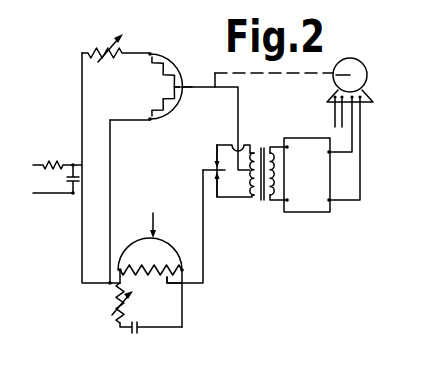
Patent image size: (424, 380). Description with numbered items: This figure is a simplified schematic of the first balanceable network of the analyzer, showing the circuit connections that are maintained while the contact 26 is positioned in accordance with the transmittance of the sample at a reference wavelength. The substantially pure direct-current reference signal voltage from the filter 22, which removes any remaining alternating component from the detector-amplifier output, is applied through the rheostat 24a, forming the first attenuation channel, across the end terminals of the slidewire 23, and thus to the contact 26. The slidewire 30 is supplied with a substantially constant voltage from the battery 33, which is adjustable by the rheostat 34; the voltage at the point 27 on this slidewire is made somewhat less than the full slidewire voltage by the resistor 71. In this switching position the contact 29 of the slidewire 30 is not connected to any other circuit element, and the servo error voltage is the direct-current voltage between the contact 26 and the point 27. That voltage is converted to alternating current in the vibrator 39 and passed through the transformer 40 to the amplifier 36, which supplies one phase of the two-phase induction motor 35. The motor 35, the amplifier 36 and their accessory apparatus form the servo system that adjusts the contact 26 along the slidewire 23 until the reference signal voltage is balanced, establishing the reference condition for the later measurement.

The filter 22 is at (55, 152).
The slidewire 23 is at (185, 77).
The rheostat 24a is at (104, 44).
The contact 26 is at (187, 89).
The point 27 is at (168, 272).
The contact 29 is at (157, 246).
The slidewire 30 is at (151, 260).
The battery 33 is at (129, 331).
The rheostat 34 is at (109, 303).
The motor 35 is at (360, 64).
The amplifier 36 is at (322, 154).
The vibrator 39 is at (214, 165).
The transformer 40 is at (257, 155).
The resistor 71 is at (172, 273).